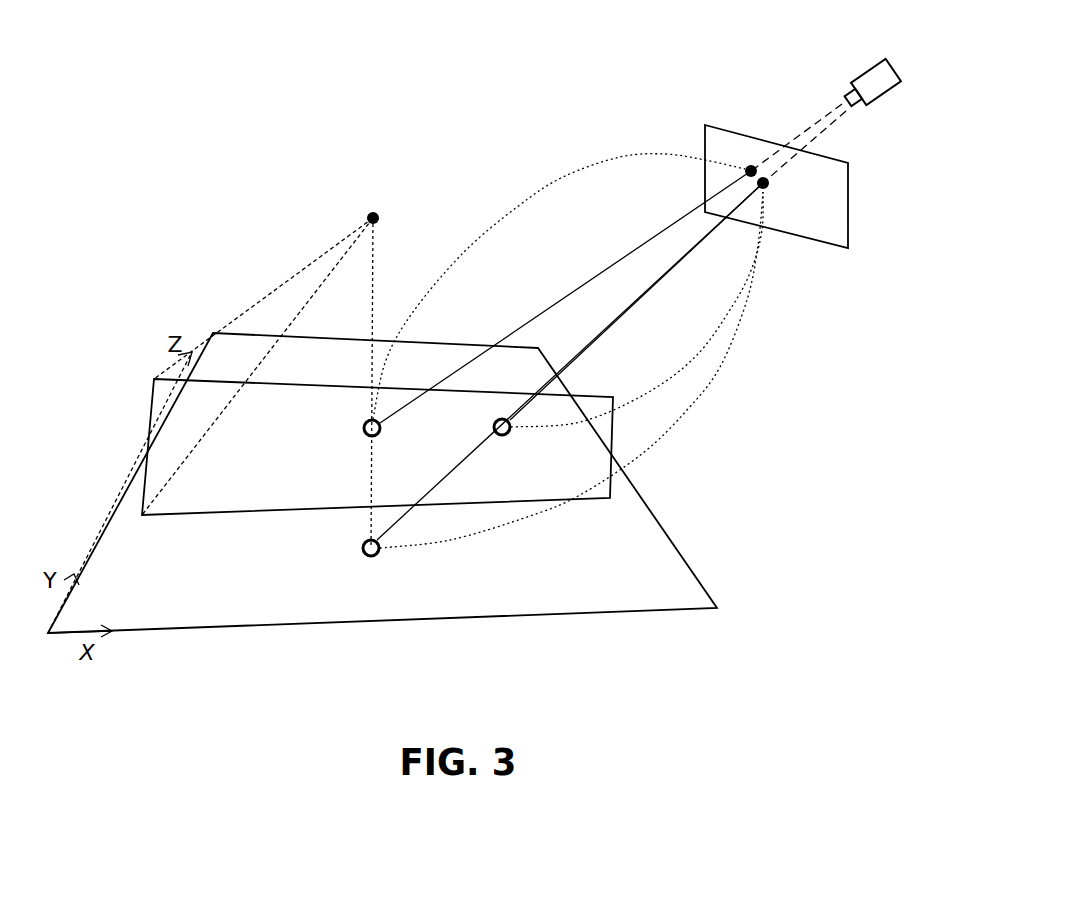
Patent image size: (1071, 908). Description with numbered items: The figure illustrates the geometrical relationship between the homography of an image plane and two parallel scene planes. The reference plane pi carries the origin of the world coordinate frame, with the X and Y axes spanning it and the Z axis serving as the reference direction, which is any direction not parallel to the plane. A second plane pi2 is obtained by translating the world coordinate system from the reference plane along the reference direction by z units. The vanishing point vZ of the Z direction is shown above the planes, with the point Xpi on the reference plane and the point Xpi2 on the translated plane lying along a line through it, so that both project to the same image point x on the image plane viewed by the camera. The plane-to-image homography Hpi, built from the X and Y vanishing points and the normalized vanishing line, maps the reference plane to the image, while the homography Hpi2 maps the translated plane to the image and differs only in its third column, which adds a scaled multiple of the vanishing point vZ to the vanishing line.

The reference plane pi is at (382, 483).
The translated parallel plane pi2 is at (377, 447).
The vanishing point of the Z direction vZ is at (273, 365).
The image point x is at (803, 153).
The point on plane π′ Xpi2 is at (456, 445).
The point on plane π Xpi is at (389, 569).
The plane-to-image homography of π′ Hpi2 is at (568, 287).
The plane-to-image homography of π Hpi is at (571, 370).